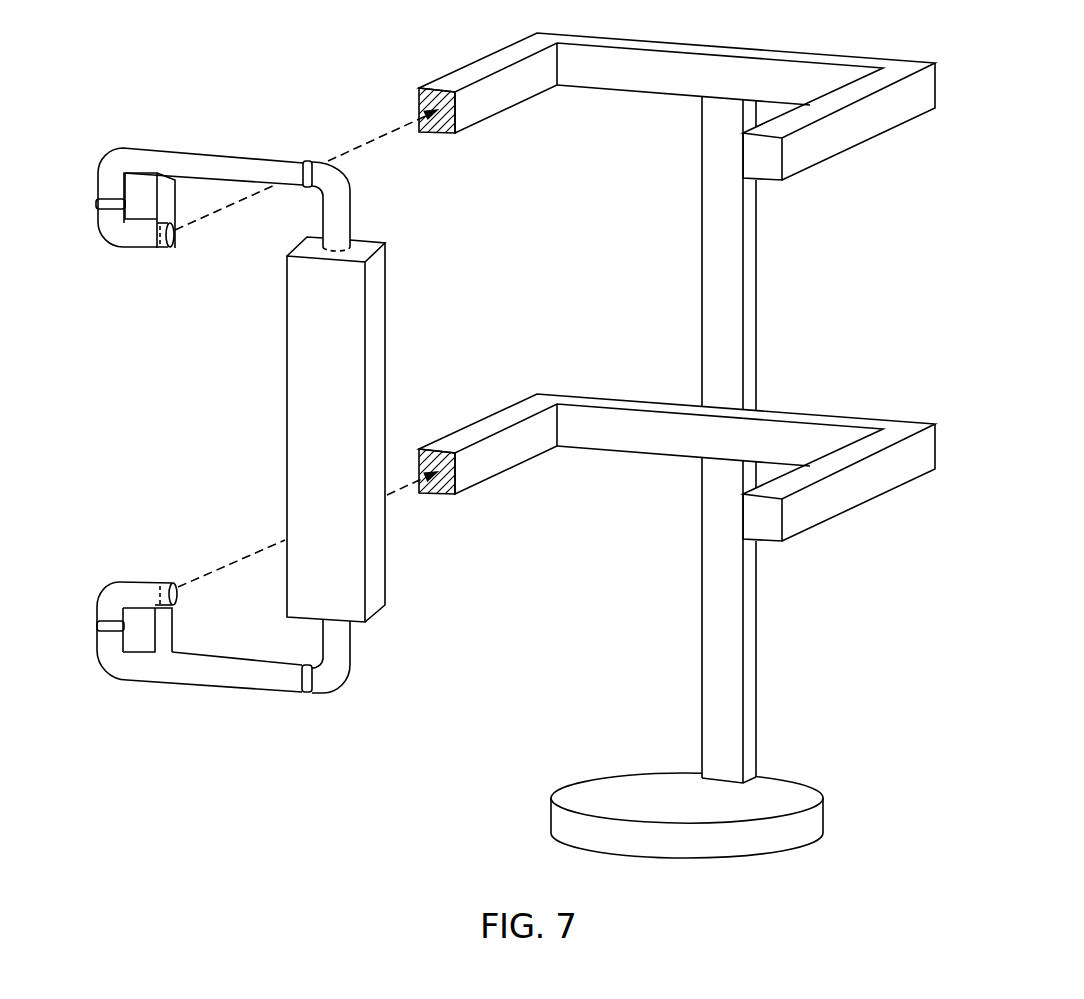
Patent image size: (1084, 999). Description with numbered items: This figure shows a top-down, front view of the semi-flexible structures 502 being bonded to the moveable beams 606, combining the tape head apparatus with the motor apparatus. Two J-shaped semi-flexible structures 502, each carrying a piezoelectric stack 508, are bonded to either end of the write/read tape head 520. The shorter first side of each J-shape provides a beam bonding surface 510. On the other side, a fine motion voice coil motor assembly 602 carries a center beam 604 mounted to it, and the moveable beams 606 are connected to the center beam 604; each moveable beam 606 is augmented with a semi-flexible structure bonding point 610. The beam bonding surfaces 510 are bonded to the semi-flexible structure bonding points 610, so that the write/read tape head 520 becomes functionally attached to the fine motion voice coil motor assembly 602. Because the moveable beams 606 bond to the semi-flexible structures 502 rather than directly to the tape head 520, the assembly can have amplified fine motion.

The semi-flexible structure 502 is at (342, 183).
The piezoelectric stack 508 is at (165, 193).
The beam bonding surface 510 is at (143, 241).
The write/read tape head 520 is at (377, 356).
The fine motion voice coil motor assembly 602 is at (812, 823).
The center beam 604 is at (750, 268).
The moveable beam 606 is at (798, 58).
The semi-flexible structure bonding point 610 is at (450, 125).